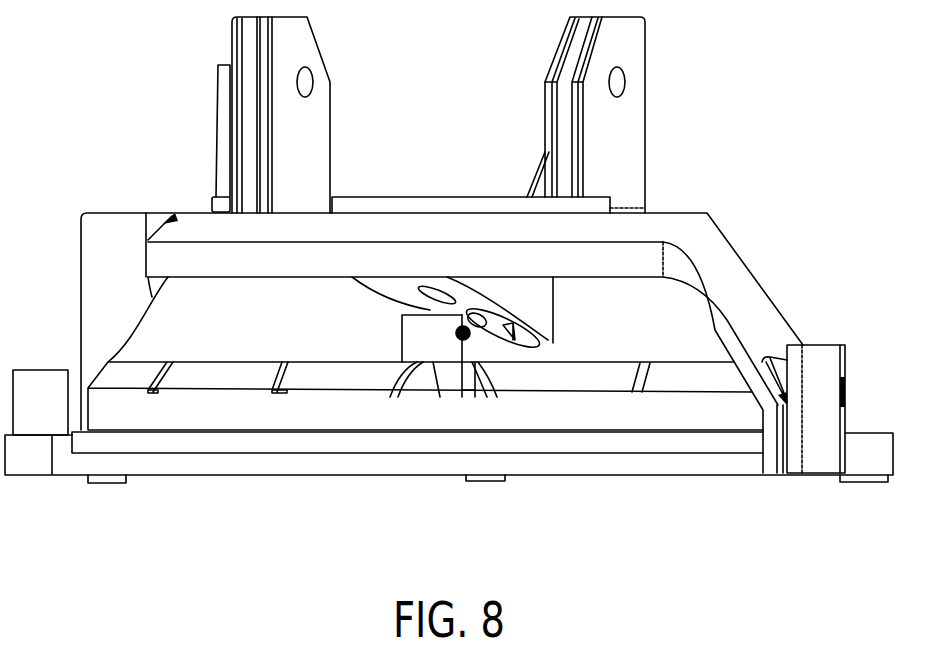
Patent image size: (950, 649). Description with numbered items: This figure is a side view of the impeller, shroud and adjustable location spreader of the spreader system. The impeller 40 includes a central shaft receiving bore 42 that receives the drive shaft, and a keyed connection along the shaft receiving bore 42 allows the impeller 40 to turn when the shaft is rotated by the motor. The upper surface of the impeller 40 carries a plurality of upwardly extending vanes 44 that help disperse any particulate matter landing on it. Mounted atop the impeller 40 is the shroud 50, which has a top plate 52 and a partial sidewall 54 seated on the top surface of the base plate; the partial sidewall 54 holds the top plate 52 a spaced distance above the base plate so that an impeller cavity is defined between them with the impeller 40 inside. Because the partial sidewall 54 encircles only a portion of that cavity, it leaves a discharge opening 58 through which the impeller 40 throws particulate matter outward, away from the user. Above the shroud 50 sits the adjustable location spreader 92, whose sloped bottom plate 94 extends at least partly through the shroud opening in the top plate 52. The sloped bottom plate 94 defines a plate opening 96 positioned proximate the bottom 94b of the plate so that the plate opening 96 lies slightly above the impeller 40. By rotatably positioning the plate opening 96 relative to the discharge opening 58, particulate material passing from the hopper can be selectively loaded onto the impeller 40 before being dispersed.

The impeller 40 is at (293, 417).
The central shaft receiving bore 42 is at (405, 306).
The upwardly extending vanes 44 is at (277, 392).
The shroud 50 is at (706, 193).
The top plate 52 is at (662, 212).
The partial sidewall 54 is at (772, 317).
The discharge opening 58 is at (672, 332).
The adjustable location spreader 92 is at (455, 212).
The sloped bottom plate 94 is at (538, 287).
The bottom of bottom plate 94b is at (550, 340).
The plate opening 96 is at (500, 343).